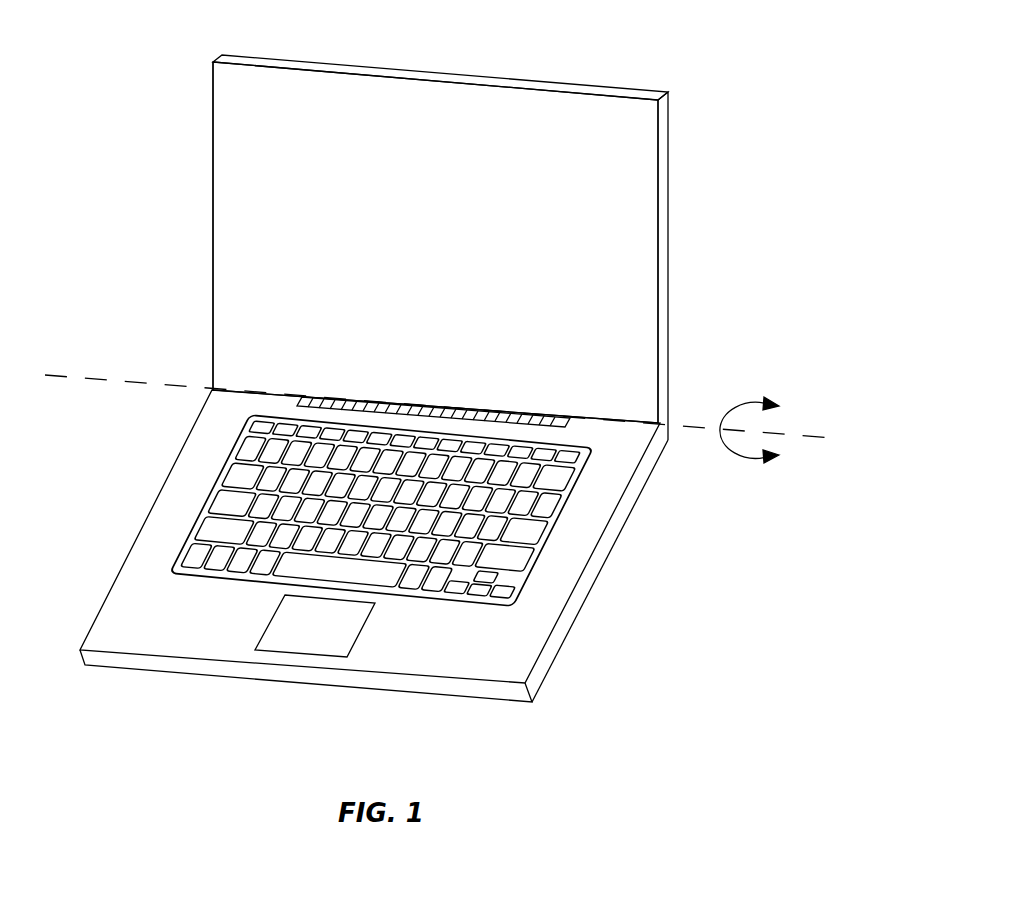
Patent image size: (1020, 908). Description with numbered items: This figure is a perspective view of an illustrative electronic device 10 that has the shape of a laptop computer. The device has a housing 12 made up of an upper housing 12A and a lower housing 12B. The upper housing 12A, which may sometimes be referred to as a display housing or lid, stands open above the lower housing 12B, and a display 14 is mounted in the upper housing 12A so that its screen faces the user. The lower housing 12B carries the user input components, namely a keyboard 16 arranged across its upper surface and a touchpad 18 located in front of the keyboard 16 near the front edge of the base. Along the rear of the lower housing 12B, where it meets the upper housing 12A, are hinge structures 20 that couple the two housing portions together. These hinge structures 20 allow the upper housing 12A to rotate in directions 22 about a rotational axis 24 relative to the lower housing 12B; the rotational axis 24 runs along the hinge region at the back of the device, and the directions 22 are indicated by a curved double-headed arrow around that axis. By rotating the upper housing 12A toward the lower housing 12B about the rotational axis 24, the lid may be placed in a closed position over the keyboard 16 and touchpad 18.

The electronic device 10 is at (722, 60).
The housing 12 is at (670, 139).
The upper housing 12A is at (205, 58).
The lower housing 12B is at (192, 396).
The display 14 is at (580, 233).
The keyboard 16 is at (545, 533).
The touchpad 18 is at (322, 658).
The hinge structures 20 is at (538, 414).
The directions 22 is at (750, 466).
The rotational axis 24 is at (60, 374).